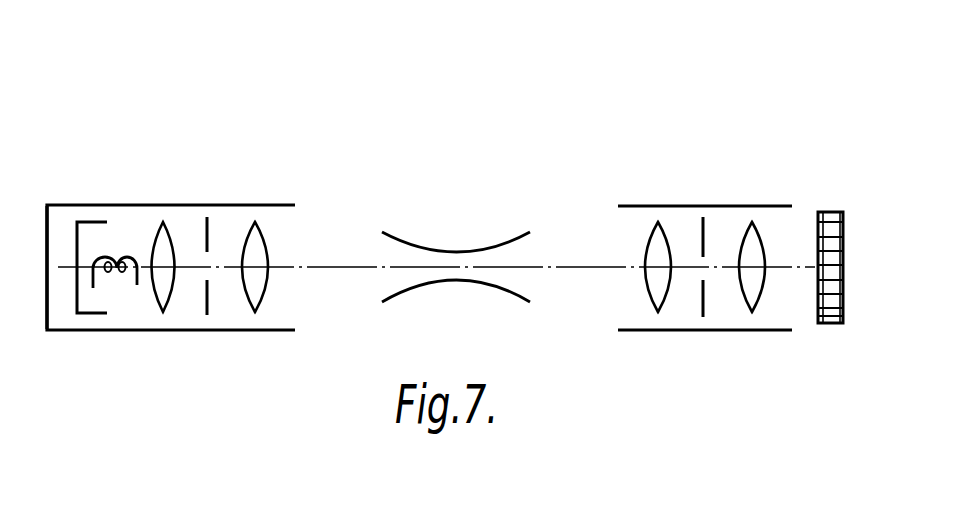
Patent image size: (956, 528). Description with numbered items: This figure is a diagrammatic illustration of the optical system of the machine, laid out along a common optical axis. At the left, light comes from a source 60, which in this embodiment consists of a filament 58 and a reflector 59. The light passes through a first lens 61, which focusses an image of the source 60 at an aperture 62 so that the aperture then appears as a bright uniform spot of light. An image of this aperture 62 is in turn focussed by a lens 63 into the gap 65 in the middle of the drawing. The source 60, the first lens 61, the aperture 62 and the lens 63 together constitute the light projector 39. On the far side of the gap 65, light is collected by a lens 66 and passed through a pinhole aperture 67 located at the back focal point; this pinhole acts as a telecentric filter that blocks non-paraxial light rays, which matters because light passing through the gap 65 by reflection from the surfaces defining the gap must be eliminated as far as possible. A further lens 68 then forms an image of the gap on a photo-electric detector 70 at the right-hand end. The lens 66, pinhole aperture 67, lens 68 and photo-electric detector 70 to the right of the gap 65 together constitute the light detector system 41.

The light projector 39 is at (227, 160).
The light detector system 41 is at (792, 160).
The filament 58 is at (137, 283).
The reflector 59 is at (77, 222).
The source 60 is at (72, 295).
The first lens 61 is at (160, 225).
The aperture 62 is at (207, 300).
The lens 63 is at (253, 222).
The gap 65 is at (453, 247).
The lens 66 is at (658, 220).
The pinhole aperture 67 is at (702, 222).
The lens 68 is at (752, 222).
The photo-electric detector 70 is at (830, 322).